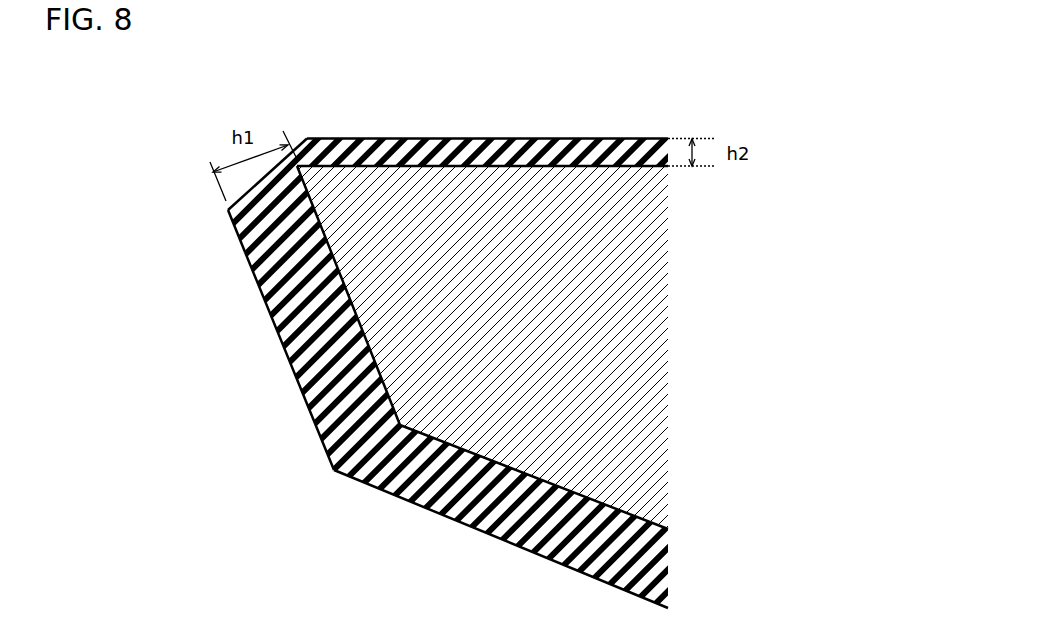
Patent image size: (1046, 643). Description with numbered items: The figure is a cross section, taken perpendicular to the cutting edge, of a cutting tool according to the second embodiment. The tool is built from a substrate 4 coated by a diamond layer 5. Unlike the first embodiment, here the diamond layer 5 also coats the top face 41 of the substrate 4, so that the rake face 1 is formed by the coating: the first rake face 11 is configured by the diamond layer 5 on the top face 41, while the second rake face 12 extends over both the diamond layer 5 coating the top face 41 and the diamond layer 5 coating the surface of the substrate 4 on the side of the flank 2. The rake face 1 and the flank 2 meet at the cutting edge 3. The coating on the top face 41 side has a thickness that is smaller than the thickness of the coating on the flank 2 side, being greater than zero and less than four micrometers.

The rake face 1 is at (448, 110).
The first rake face 11 is at (380, 41).
The second rake face 12 is at (337, 143).
The flank 2 is at (271, 316).
The cutting edge 3 is at (228, 211).
The substrate 4 is at (647, 305).
The top face of substrate 41 is at (573, 165).
The diamond layer 5 is at (658, 568).